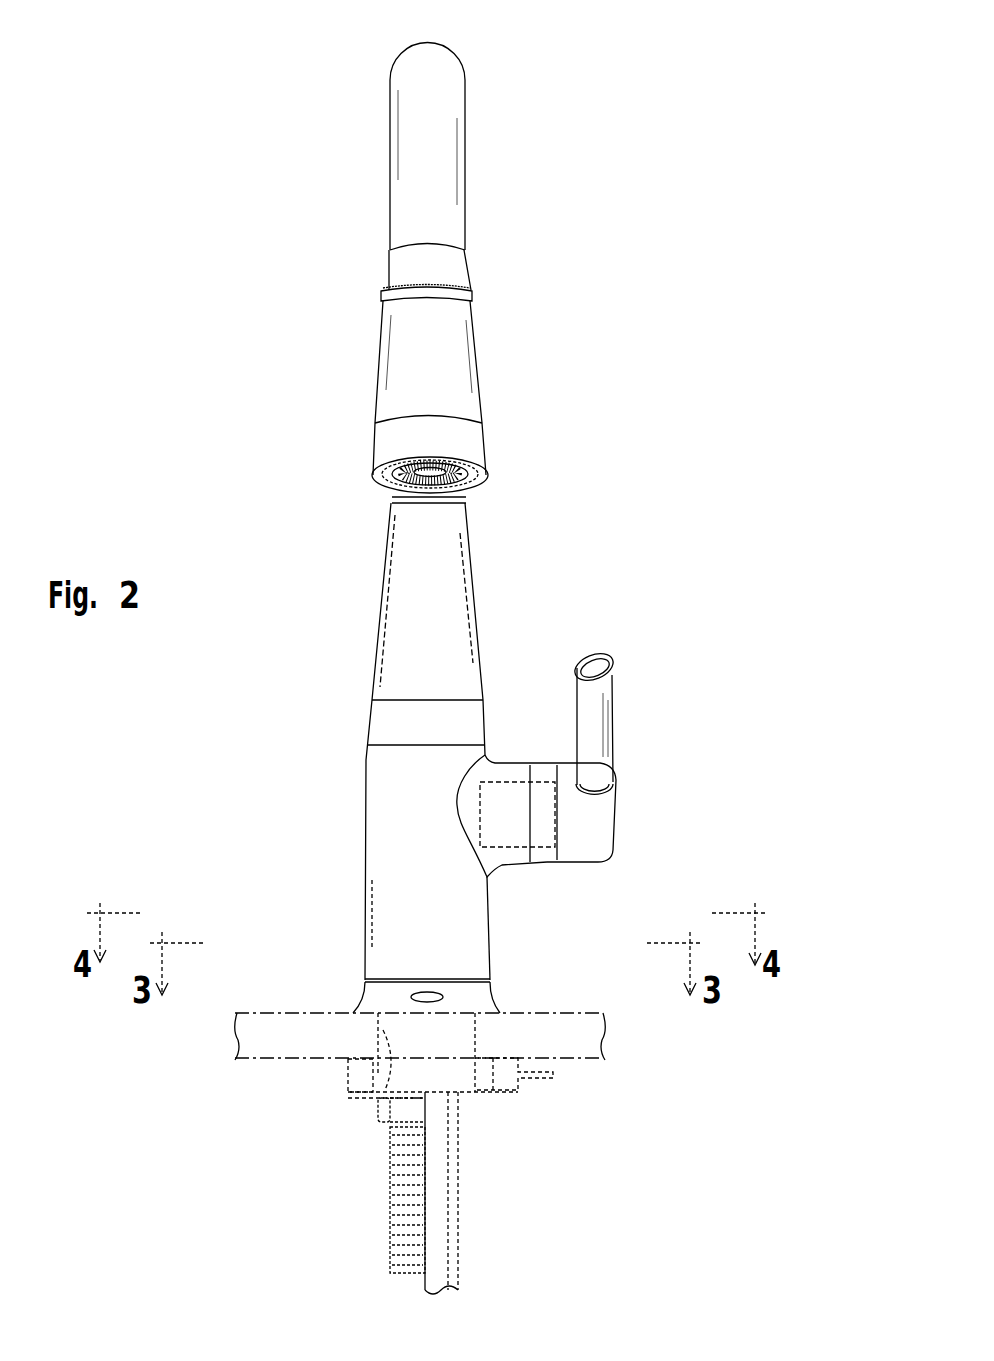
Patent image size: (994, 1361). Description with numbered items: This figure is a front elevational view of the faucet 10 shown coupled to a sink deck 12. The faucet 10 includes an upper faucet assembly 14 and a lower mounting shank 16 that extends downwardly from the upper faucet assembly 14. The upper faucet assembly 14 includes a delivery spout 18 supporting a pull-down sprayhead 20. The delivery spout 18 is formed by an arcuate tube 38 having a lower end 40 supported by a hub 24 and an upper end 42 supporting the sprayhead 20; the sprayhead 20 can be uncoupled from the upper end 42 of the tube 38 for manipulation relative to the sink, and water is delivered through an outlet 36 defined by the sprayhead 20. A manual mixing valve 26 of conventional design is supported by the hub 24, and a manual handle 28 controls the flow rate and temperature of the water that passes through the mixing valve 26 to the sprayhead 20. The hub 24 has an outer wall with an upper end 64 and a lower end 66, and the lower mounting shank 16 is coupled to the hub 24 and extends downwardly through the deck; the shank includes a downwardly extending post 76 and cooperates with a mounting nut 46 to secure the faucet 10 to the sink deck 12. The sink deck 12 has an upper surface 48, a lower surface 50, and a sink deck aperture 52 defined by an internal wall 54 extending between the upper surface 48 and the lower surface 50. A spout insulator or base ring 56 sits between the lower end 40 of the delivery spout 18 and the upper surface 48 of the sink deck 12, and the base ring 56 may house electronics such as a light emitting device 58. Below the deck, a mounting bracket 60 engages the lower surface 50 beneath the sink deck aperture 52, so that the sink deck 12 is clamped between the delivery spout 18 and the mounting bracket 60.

The faucet 10 is at (742, 118).
The sink deck 12 is at (590, 1010).
The upper faucet assembly 14 is at (584, 438).
The lower mounting shank 16 is at (278, 1222).
The delivery spout 18 is at (465, 167).
The pull-down sprayhead 20 is at (383, 395).
The hub 24 is at (398, 605).
The manual mixing valve 26 is at (500, 782).
The manual handle 28 is at (612, 764).
The outlet 36 is at (449, 487).
The arcuate tube 38 is at (400, 194).
The lower end 40 is at (383, 501).
The upper end 42 is at (383, 302).
The mounting nut 46 is at (380, 1117).
The upper surface 48 is at (270, 1010).
The lower surface 50 is at (245, 1060).
The sink deck aperture 52 is at (477, 1037).
The internal wall 54 is at (372, 1096).
The base ring 56 is at (362, 997).
The light emitting device 58 is at (440, 997).
The mounting bracket 60 is at (478, 1090).
The upper end 64 is at (545, 531).
The lower end 66 is at (350, 957).
The post 76 is at (392, 1258).